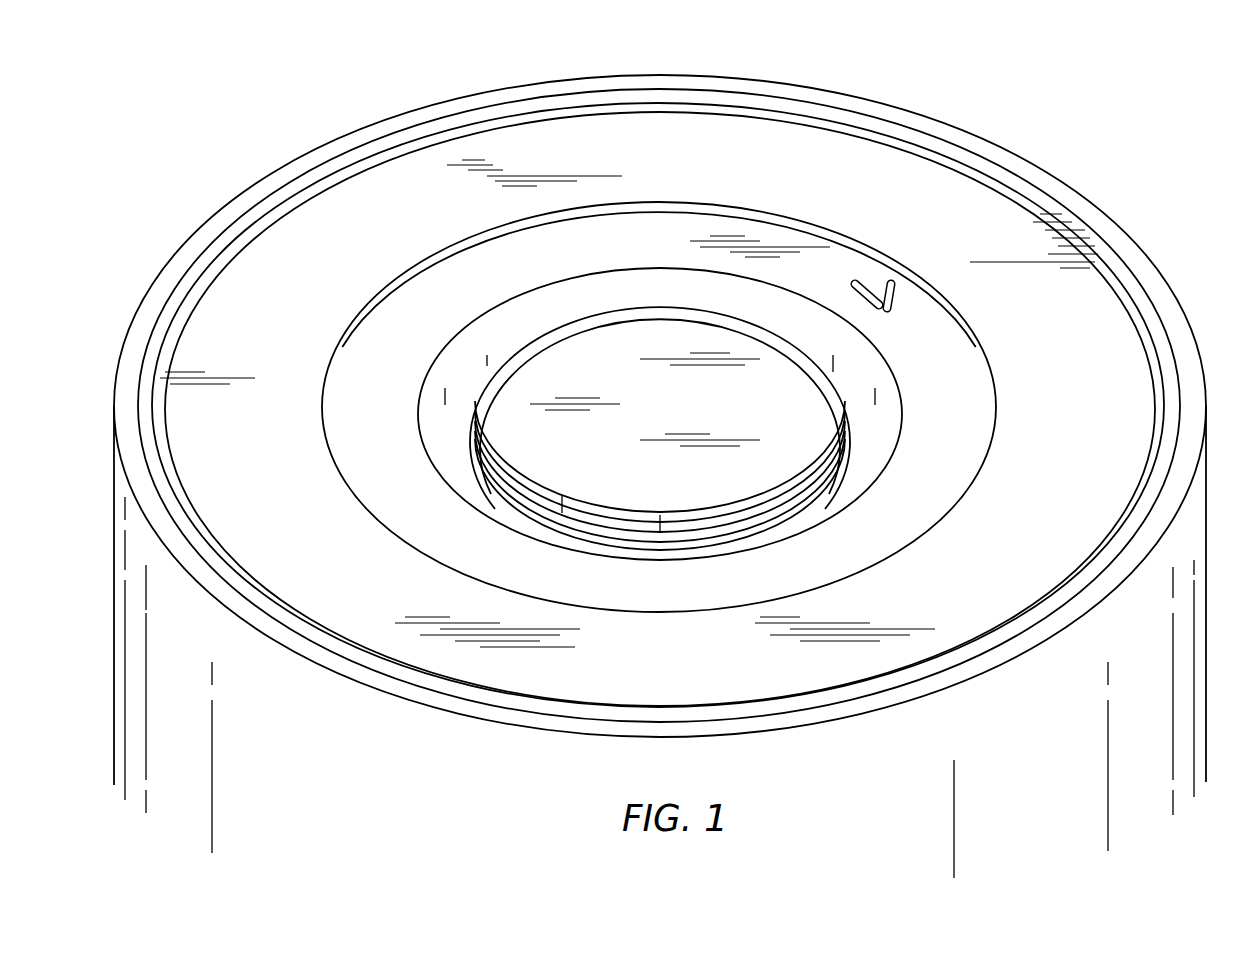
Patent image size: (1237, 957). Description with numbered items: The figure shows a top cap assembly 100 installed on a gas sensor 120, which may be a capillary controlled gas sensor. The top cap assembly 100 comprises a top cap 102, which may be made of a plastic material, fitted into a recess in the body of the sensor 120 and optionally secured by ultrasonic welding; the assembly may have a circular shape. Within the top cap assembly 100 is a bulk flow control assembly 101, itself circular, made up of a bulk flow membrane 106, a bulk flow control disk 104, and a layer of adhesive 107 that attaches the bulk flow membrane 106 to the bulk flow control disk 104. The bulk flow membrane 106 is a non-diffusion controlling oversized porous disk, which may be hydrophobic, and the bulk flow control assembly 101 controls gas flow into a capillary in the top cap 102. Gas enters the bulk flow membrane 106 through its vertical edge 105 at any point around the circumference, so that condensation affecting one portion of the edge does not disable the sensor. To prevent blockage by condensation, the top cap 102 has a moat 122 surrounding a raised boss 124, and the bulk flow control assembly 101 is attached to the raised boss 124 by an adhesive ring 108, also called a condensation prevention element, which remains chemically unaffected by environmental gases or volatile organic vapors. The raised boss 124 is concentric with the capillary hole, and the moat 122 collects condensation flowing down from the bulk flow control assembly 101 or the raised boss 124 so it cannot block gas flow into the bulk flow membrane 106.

The top cap assembly 100 is at (675, 460).
The bulk flow control assembly 101 is at (653, 318).
The top cap 102 is at (960, 198).
The bulk flow control disk 104 is at (682, 416).
The vertical edge 105 is at (584, 515).
The bulk flow membrane 106 is at (750, 506).
The layer of adhesive 107 is at (560, 495).
The adhesive ring 108 is at (625, 534).
The gas sensor 120 is at (1152, 254).
The moat 122 is at (866, 457).
The raised boss 124 is at (833, 417).